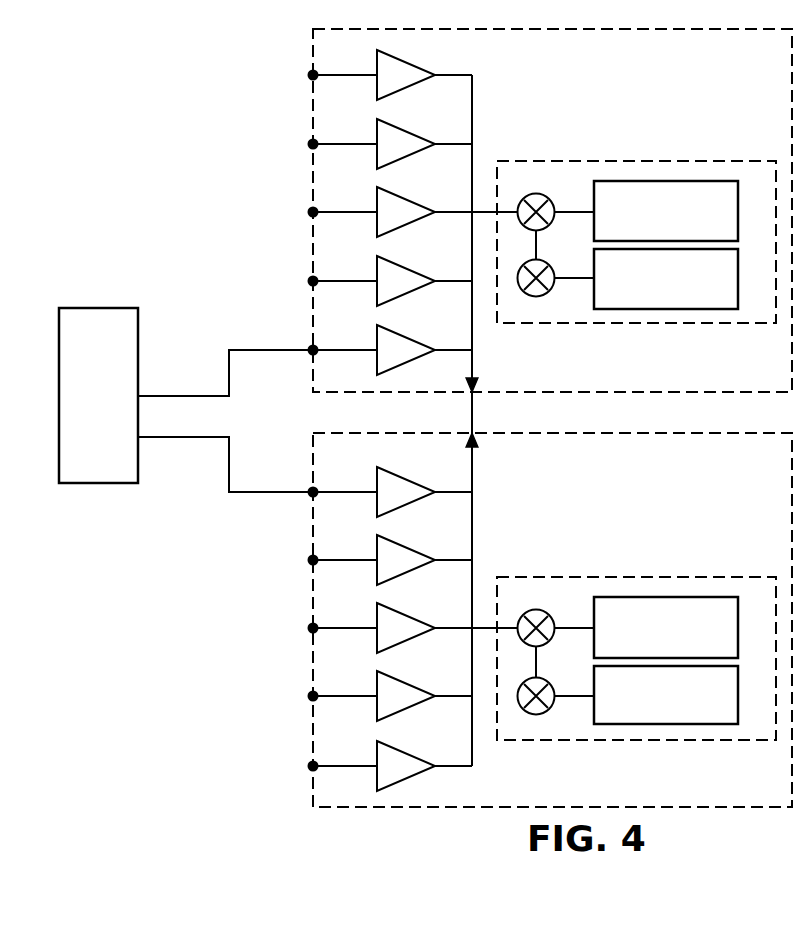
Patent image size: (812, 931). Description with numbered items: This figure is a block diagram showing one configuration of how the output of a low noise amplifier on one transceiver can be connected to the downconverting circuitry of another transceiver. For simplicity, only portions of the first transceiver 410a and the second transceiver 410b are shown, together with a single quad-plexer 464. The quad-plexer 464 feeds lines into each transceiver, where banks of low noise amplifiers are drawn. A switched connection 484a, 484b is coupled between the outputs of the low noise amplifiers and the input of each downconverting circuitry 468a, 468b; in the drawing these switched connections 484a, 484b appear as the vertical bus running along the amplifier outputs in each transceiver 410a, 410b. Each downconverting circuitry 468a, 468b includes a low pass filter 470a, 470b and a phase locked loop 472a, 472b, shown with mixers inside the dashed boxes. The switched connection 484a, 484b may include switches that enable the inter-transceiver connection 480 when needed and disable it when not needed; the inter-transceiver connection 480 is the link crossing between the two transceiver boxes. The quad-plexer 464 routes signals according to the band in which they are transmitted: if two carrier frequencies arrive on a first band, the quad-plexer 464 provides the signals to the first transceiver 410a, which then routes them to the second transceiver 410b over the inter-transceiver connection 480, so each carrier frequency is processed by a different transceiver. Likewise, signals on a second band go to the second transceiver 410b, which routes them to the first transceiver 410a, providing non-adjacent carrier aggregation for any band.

The quad-plexer 464 is at (98, 395).
The first transceiver 410a is at (550, 210).
The second transceiver 410b is at (550, 620).
The downconverting circuitry 468a is at (657, 161).
The downconverting circuitry 468b is at (657, 577).
The low pass filter 470a is at (666, 211).
The low pass filter 470b is at (666, 627).
The phase locked loop (PLL) 472a is at (666, 279).
The phase locked loop (PLL) 472b is at (666, 695).
The switched connection 484a is at (475, 364).
The switched connection 484b is at (475, 515).
The inter-transceiver connection 480 is at (475, 416).